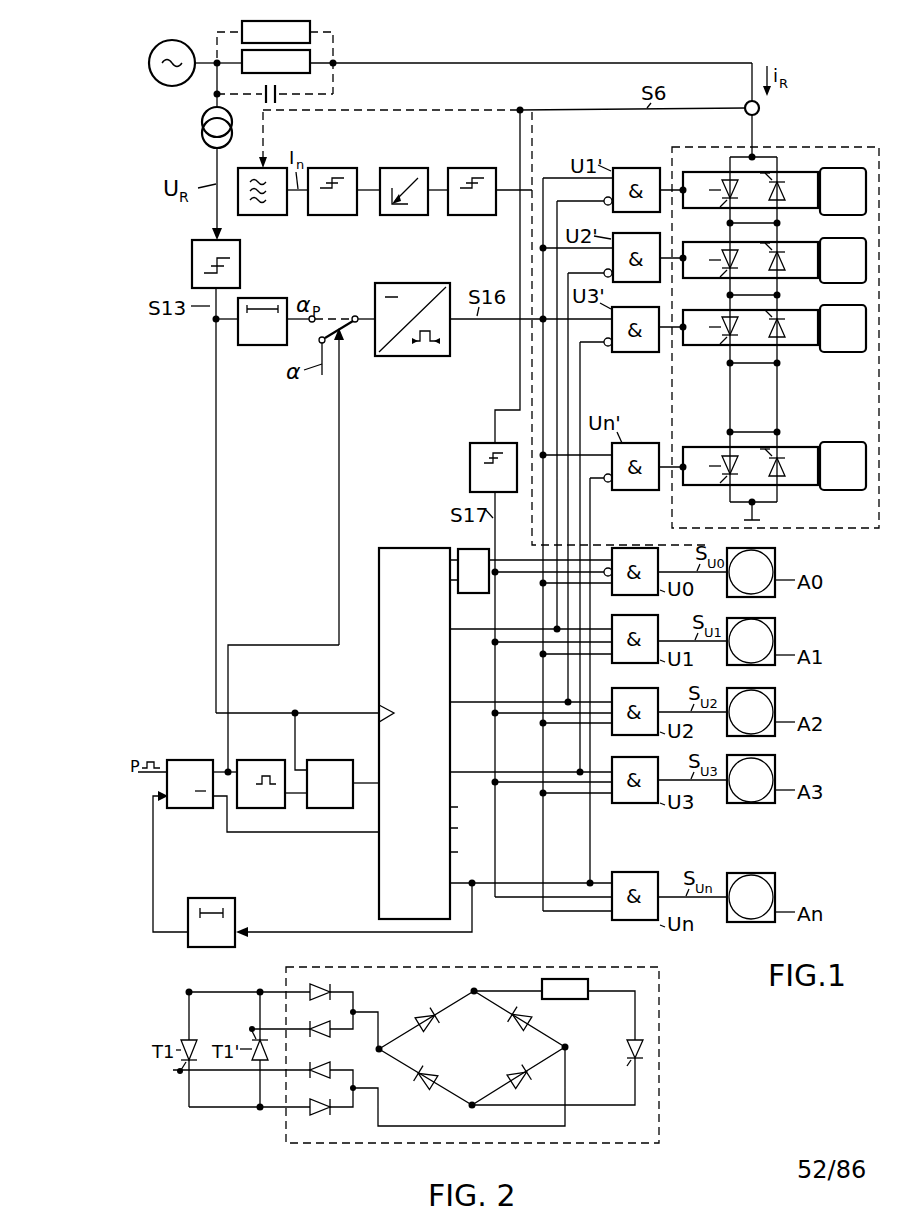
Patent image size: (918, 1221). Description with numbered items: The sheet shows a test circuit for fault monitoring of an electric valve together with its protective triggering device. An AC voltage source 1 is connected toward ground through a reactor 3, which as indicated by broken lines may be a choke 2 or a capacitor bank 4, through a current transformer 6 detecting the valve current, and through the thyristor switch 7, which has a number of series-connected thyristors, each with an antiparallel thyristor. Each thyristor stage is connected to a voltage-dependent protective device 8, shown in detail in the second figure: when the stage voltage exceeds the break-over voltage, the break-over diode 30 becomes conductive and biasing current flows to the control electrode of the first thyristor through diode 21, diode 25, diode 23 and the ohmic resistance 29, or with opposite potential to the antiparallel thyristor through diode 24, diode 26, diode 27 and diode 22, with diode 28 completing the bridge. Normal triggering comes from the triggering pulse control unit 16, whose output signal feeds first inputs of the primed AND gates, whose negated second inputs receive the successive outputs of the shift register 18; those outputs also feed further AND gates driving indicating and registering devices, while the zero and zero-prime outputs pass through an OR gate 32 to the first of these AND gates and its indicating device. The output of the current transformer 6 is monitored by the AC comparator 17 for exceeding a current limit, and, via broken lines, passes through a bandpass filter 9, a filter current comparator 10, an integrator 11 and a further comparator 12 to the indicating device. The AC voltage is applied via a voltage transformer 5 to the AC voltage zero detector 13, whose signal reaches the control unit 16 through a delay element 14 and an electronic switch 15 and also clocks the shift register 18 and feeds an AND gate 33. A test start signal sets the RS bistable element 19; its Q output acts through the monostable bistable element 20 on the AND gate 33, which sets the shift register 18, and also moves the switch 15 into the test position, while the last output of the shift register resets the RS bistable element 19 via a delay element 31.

In FIG. 1, the AC voltage source 1 is at (163, 85).
In FIG. 1, the choke 2 is at (310, 27).
In FIG. 1, the reactor 3 is at (310, 56).
In FIG. 1, the capacitor bank 4 is at (279, 97).
In FIG. 1, the voltage transformer 5 is at (200, 143).
In FIG. 1, the current transformer 6 is at (760, 108).
In FIG. 1, the thyristor switch 7 is at (822, 145).
In FIG. 1, the protective device 8 is at (822, 170).
In FIG. 2, the protective device 8 is at (660, 991).
In FIG. 1, the bandpass filter 9 is at (274, 168).
In FIG. 1, the filter current comparator 10 is at (332, 168).
In FIG. 1, the integrator 11 is at (402, 168).
In FIG. 1, the comparator 12 is at (466, 168).
In FIG. 1, the AC voltage zero detector 13 is at (192, 263).
In FIG. 1, the delay element 14 is at (263, 298).
In FIG. 1, the electronic switch 15 is at (330, 316).
In FIG. 1, the triggering pulse control unit 16 is at (408, 283).
In FIG. 1, the AC comparator 17 is at (470, 467).
In FIG. 1, the shift register 18 is at (398, 548).
In FIG. 1, the RS bistable element 19 is at (190, 760).
In FIG. 1, the monostable non-retriggerable bistable element 20 is at (262, 760).
In FIG. 2, the diode 21 is at (331, 990).
In FIG. 2, the diode 22 is at (331, 1032).
In FIG. 2, the diode 23 is at (331, 1066).
In FIG. 2, the diode 24 is at (331, 1110).
In FIG. 2, the diode 25 is at (429, 1014).
In FIG. 2, the diode 26 is at (510, 1022).
In FIG. 2, the diode 27 is at (428, 1089).
In FIG. 2, the diode 28 is at (507, 1072).
In FIG. 2, the ohmic resistance 29 is at (566, 1002).
In FIG. 2, the break-over diode 30 is at (645, 1049).
In FIG. 1, the delay element 31 is at (209, 898).
In FIG. 1, the OR gate 32 is at (473, 594).
In FIG. 1, the AND gate 33 is at (326, 760).